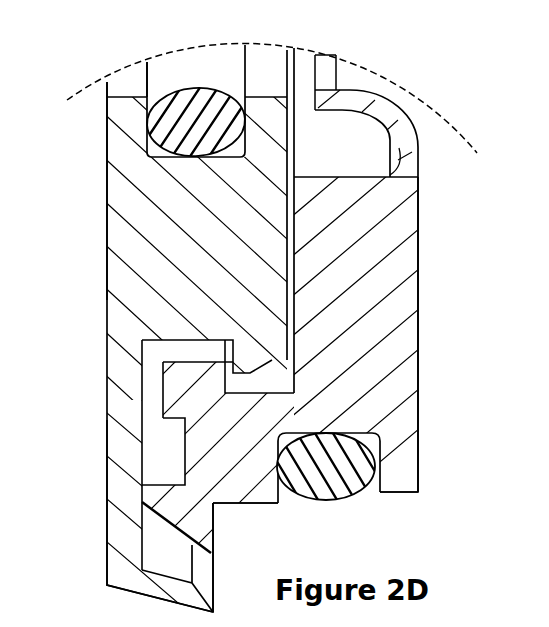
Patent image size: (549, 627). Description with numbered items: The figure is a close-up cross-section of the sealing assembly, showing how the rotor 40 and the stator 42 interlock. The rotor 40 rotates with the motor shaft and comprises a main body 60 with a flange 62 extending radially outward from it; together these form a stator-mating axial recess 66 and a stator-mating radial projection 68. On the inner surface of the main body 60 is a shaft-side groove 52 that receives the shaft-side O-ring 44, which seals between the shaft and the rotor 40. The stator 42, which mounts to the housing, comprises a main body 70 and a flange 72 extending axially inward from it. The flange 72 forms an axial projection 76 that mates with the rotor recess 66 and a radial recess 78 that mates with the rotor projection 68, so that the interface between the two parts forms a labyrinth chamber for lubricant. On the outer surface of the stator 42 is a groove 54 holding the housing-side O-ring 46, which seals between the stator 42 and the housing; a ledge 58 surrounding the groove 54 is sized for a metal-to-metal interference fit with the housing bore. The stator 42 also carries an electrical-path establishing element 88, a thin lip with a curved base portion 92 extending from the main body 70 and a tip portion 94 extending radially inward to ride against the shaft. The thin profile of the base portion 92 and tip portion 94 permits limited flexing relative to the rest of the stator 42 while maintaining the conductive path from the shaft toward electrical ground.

The rotor 40 is at (100, 218).
The stator 42 is at (428, 317).
The shaft-side O-ring 44 is at (213, 102).
The housing-side O-ring 46 is at (347, 487).
The shaft-side groove 52 is at (153, 97).
The shaft-side groove 54 is at (281, 478).
The ledge 58 is at (417, 531).
The main body 60 is at (140, 292).
The flange 62 is at (127, 465).
The stator-mating axial recess 66 is at (178, 470).
The stator-mating radial projection 68 is at (245, 353).
The main body 70 is at (372, 256).
The flange 72 is at (223, 496).
The axial projection 76 is at (167, 510).
The radial recess 78 is at (285, 390).
The electrical-path establishing element 88 is at (400, 110).
The curved base portion 92 is at (403, 148).
The tip portion 94 is at (342, 102).